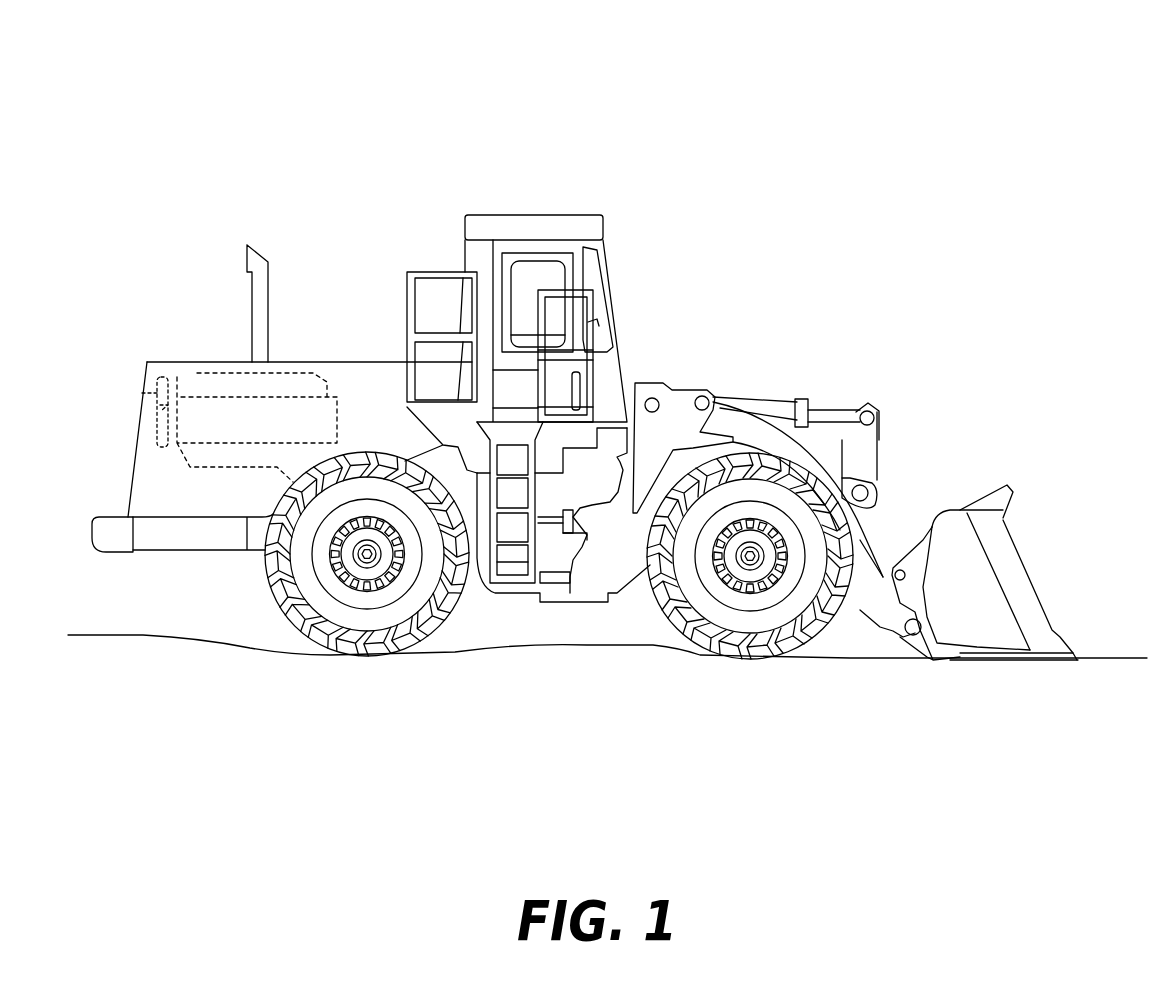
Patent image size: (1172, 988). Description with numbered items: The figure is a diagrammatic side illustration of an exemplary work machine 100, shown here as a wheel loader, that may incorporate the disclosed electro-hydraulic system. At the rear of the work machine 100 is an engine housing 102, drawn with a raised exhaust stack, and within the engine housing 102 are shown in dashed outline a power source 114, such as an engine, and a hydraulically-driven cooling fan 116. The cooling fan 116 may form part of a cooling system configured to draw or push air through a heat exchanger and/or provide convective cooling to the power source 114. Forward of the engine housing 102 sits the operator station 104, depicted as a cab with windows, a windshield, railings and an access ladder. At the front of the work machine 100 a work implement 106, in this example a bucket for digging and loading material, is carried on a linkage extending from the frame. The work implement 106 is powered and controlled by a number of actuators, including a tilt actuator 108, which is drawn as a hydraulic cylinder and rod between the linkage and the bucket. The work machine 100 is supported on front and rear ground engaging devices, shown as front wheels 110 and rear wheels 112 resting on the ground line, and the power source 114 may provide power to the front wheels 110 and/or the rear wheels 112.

The work machine 100 is at (621, 125).
The engine housing 102 is at (166, 362).
The operator station 104 is at (610, 270).
The work implement 106 is at (1003, 517).
The tilt actuator 108 is at (800, 398).
The front wheels 110 is at (842, 640).
The rear wheels 112 is at (440, 632).
The power source 114 is at (290, 368).
The cooling fan 116 is at (142, 393).